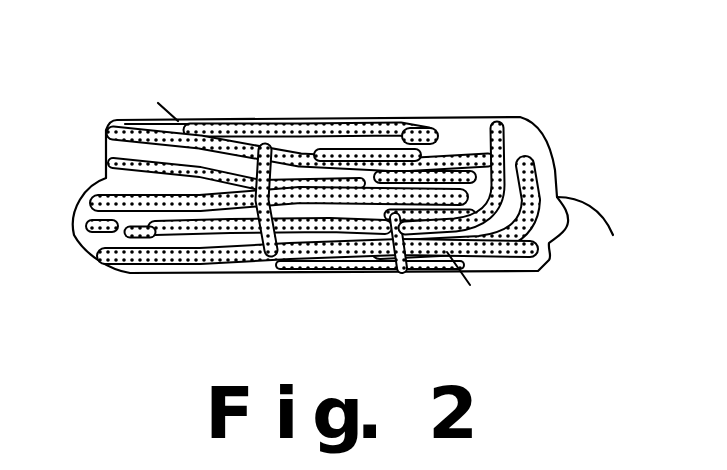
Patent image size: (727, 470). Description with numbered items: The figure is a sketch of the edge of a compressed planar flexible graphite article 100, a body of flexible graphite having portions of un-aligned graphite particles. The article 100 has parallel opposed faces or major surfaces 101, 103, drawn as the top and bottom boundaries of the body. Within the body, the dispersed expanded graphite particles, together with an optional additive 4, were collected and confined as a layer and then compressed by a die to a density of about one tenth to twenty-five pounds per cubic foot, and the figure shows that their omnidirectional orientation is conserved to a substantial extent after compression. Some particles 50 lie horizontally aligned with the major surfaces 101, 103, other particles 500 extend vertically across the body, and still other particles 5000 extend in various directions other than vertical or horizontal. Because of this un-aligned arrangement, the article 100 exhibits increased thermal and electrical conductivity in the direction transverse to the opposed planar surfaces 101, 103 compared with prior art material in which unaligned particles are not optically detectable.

The compressed planar flexible graphite article 100 is at (263, 97).
The major surface 101 is at (338, 117).
The major surface 103 is at (268, 250).
The optional additive 4 is at (106, 150).
The horizontally aligned exfoliated graphite particles 50 is at (505, 152).
The vertically extending exfoliated graphite particles 500 is at (282, 118).
The exfoliated graphite particles oriented in other directions 5000 is at (577, 237).